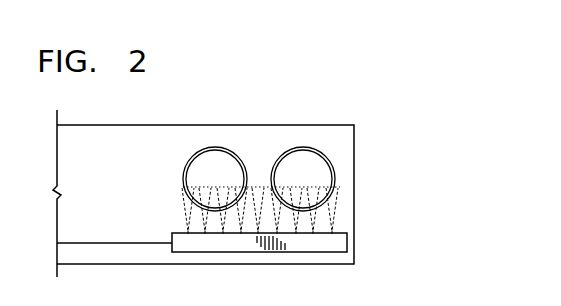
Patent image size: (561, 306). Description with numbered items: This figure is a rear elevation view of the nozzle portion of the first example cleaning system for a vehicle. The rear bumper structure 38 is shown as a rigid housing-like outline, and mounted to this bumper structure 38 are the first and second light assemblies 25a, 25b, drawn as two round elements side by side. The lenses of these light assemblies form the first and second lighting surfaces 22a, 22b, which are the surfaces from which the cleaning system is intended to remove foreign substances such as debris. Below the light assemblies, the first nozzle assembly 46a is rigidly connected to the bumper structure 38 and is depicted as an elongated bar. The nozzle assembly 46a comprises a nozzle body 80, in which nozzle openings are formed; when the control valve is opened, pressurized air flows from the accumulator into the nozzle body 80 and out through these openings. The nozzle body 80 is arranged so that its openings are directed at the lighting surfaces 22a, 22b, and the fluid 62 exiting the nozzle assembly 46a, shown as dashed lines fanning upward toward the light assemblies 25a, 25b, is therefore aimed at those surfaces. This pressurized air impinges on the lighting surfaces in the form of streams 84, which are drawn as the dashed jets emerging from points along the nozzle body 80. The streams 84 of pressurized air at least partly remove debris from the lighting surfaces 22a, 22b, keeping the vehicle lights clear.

The rear bumper structure 38 is at (343, 150).
The first nozzle assembly 46a is at (203, 246).
The nozzle body 80 is at (252, 248).
The first lighting surface 22a is at (313, 160).
The second lighting surface 22b is at (197, 173).
The first light assembly 25a is at (279, 148).
The second light assembly 25b is at (191, 148).
The fluid 62 is at (341, 209).
The streams 84 is at (341, 218).